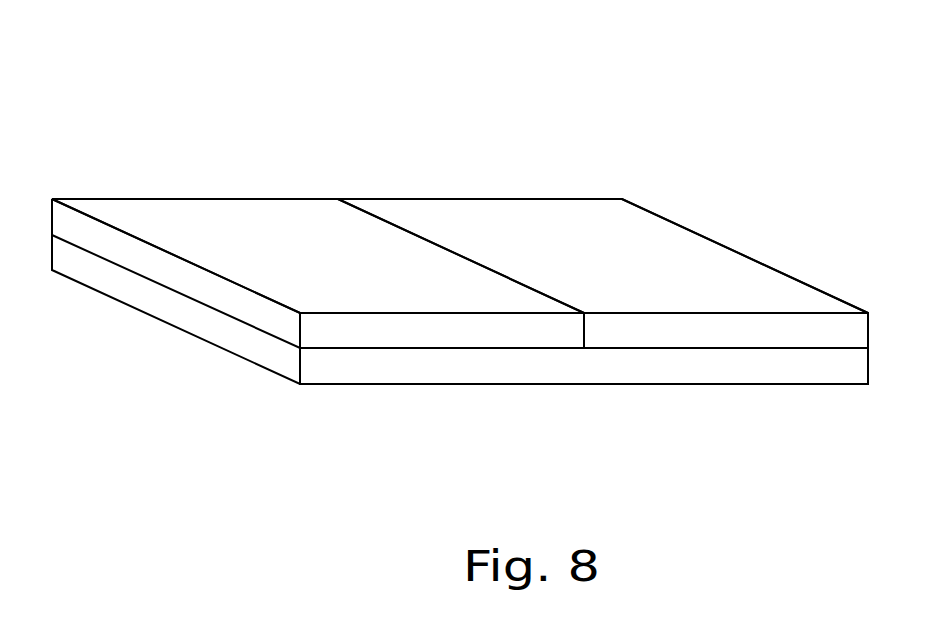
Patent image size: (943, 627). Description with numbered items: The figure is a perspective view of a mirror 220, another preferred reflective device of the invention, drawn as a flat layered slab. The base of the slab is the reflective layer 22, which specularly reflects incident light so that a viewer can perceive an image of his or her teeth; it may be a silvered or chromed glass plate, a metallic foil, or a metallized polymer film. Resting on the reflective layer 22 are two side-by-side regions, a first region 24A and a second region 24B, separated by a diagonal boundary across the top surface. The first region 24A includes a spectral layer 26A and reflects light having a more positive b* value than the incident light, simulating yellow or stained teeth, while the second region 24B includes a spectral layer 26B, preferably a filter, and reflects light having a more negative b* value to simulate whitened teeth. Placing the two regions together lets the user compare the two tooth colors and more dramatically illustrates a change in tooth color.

The mirror 220 is at (605, 135).
The first region 24A is at (660, 253).
The second region 24B is at (282, 226).
The spectral layer 26A is at (710, 333).
The spectral layer 26B is at (419, 335).
The reflective layer 22 is at (552, 367).